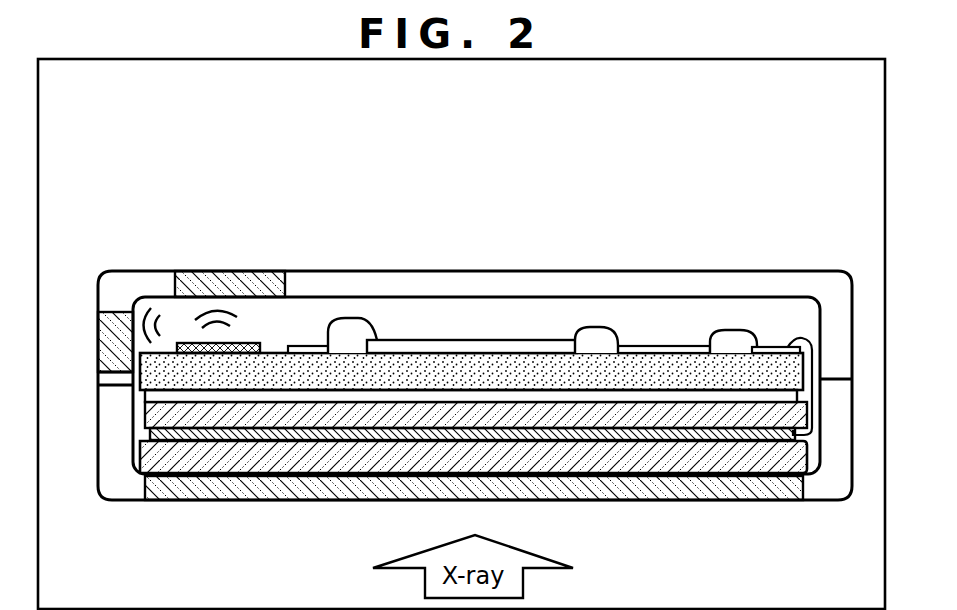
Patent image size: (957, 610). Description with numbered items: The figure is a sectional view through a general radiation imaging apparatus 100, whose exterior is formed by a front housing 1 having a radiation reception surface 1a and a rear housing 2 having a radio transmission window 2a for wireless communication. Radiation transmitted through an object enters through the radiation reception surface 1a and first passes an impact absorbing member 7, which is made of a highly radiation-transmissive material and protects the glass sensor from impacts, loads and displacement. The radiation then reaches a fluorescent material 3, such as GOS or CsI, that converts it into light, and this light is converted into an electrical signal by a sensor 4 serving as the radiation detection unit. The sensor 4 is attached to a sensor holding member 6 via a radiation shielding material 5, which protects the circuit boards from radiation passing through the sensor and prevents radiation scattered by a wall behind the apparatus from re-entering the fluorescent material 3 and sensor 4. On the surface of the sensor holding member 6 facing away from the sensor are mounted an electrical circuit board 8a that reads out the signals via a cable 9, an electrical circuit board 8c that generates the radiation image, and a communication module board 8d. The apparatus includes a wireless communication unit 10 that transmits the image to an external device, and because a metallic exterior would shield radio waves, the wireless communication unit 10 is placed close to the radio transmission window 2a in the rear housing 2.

The imaging apparatus 100 is at (667, 126).
The front housing 1 is at (98, 476).
The radiation reception surface 1a is at (713, 490).
The rear housing 2 is at (802, 270).
The radio transmission window 2a is at (233, 280).
The fluorescent material 3 is at (795, 437).
The sensor 4 is at (146, 420).
The radiation shielding material 5 is at (146, 396).
The sensor holding member 6 is at (140, 360).
The impact absorbing member 7 is at (807, 455).
The electrical circuit board 8a is at (777, 347).
The electrical circuit board 8c is at (405, 340).
The communication module board 8d is at (310, 345).
The cable 9 is at (592, 327).
The wireless communication unit 10 is at (190, 345).